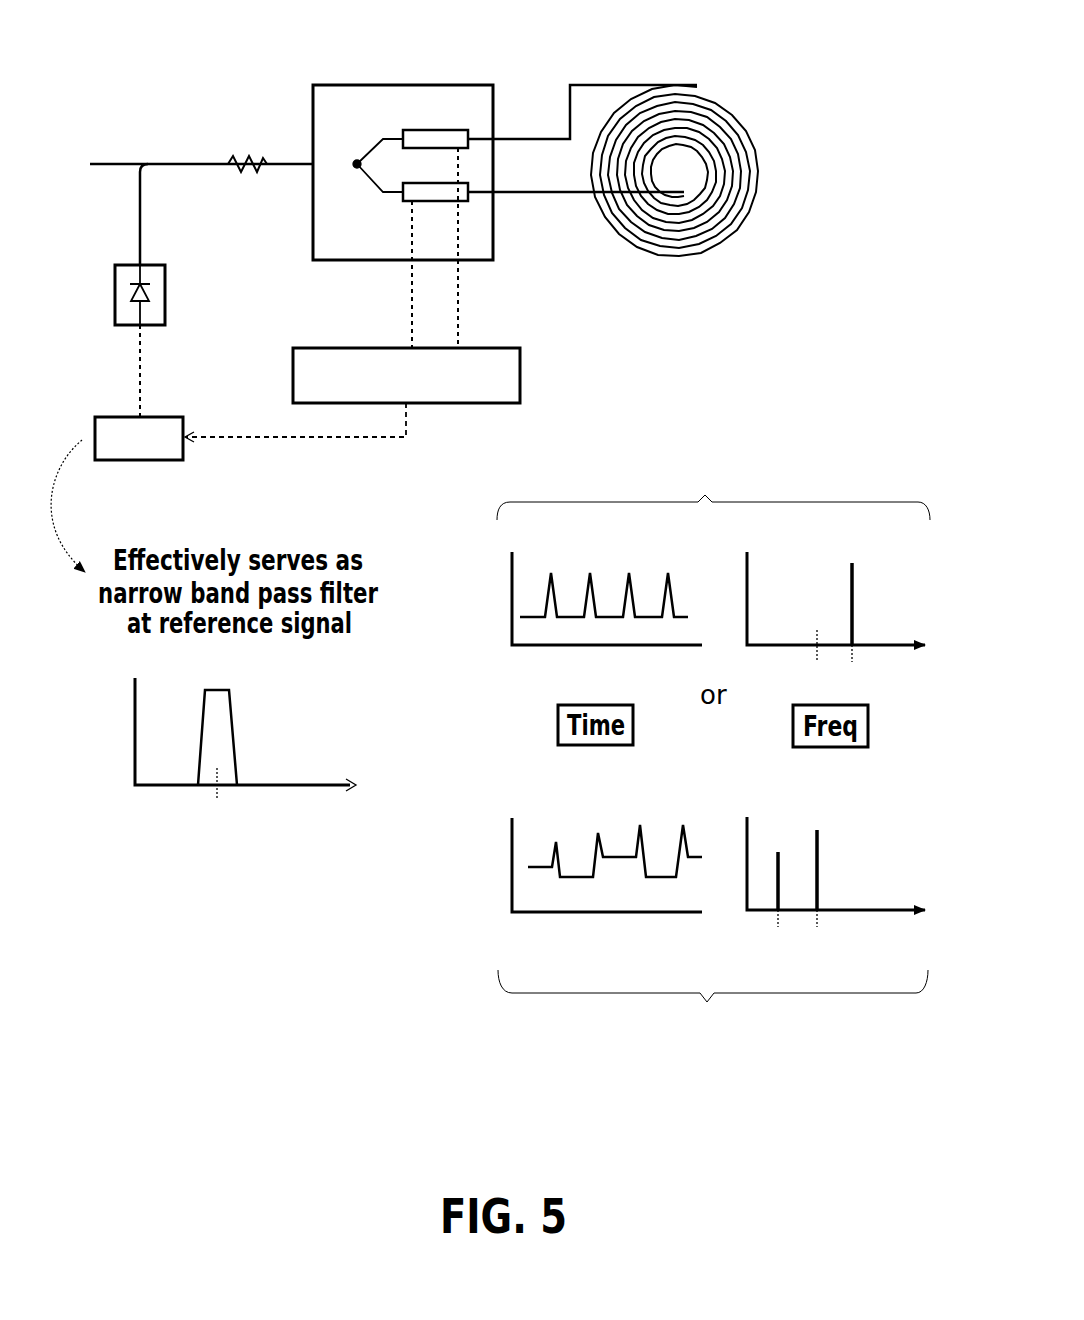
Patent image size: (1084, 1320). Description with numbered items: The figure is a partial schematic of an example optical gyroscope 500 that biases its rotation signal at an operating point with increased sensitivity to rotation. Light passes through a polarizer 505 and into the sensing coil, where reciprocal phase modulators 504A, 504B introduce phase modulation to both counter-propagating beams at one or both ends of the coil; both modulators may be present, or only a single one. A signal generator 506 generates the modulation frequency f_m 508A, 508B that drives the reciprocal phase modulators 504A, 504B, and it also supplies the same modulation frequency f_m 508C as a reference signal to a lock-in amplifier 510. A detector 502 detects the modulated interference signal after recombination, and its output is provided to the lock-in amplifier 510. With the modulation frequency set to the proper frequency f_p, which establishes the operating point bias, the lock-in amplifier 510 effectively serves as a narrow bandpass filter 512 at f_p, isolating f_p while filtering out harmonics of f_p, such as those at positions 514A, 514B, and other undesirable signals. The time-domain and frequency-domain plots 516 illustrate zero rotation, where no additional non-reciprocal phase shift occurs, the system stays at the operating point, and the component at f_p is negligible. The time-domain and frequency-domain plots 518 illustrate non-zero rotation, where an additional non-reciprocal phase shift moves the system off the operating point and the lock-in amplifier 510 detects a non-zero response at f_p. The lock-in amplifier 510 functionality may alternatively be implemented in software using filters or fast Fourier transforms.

The optical gyroscope 500 is at (778, 32).
The detector 502 is at (115, 300).
The reciprocal phase modulator 504A is at (448, 130).
The reciprocal phase modulator 504B is at (463, 201).
The polarizer 505 is at (238, 160).
The signal generator 506 is at (293, 375).
The modulation frequency f_m 508A is at (458, 290).
The modulation frequency f_m 508B is at (412, 290).
The modulation frequency f_m 508C is at (322, 438).
The lock-in amplifier 510 is at (128, 417).
The narrow bandpass filter 512 is at (235, 730).
The position of harmonic of f_p 514A is at (863, 606).
The position of harmonic of f_p 514B is at (827, 876).
The time-domain and frequency-domain plots 516 is at (729, 562).
The time-domain and frequency-domain plots 518 is at (676, 936).